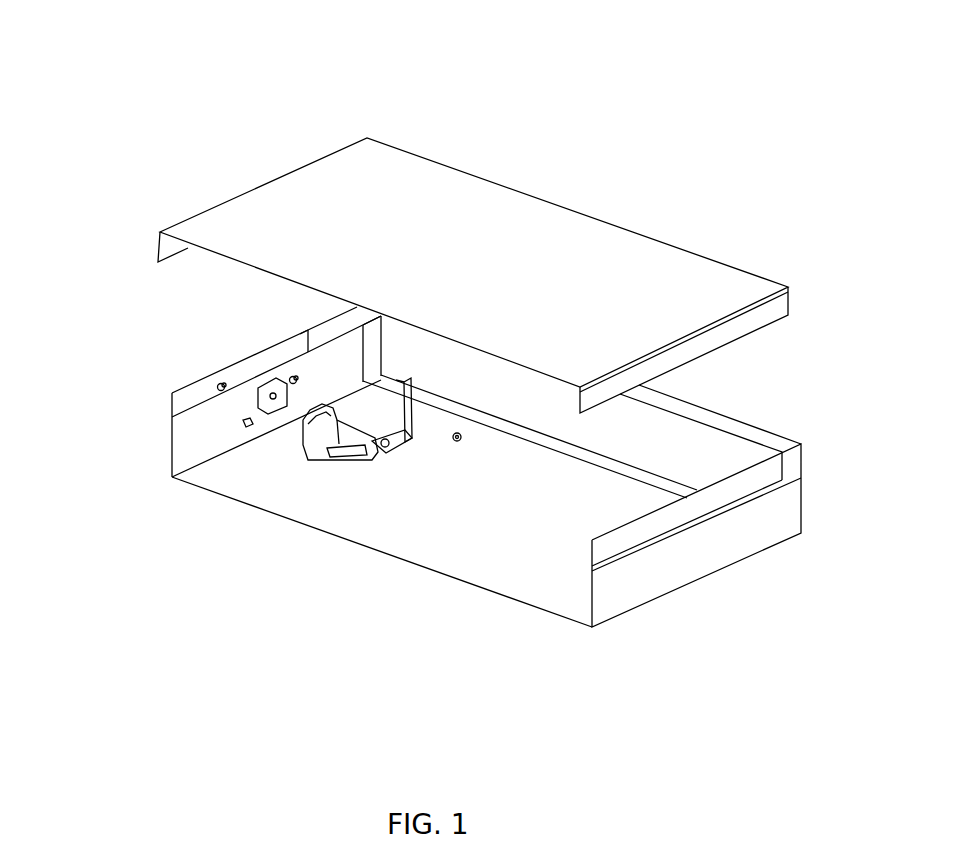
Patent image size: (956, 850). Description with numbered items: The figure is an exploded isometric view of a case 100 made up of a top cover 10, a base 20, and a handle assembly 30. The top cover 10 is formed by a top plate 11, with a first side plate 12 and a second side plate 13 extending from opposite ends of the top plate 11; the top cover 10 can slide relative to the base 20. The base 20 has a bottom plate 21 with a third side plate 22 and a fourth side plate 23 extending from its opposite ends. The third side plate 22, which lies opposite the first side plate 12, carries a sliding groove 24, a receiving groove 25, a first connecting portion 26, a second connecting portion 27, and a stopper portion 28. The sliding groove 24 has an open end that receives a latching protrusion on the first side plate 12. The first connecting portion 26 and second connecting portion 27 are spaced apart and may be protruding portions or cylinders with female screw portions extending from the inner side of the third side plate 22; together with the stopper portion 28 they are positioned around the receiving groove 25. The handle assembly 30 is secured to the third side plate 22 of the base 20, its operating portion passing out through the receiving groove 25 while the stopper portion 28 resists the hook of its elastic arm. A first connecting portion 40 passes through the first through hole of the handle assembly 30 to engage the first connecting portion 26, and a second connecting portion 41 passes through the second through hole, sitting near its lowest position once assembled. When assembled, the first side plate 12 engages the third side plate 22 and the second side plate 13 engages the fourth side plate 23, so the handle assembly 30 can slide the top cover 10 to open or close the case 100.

The case 100 is at (417, 101).
The top cover 10 is at (678, 236).
The top plate 11 is at (316, 218).
The first side plate 12 is at (156, 260).
The second side plate 13 is at (693, 352).
The base 20 is at (684, 598).
The bottom plate 21 is at (531, 543).
The third side plate 22 is at (181, 455).
The fourth side plate 23 is at (655, 572).
The sliding groove 24 is at (288, 343).
The receiving groove 25 is at (268, 402).
The first connecting portion 26 is at (216, 386).
The second connecting portion 27 is at (289, 379).
The stopper portion 28 is at (243, 422).
The handle assembly 30 is at (333, 462).
The first connecting portion 40 is at (385, 448).
The second connecting portion 41 is at (456, 442).